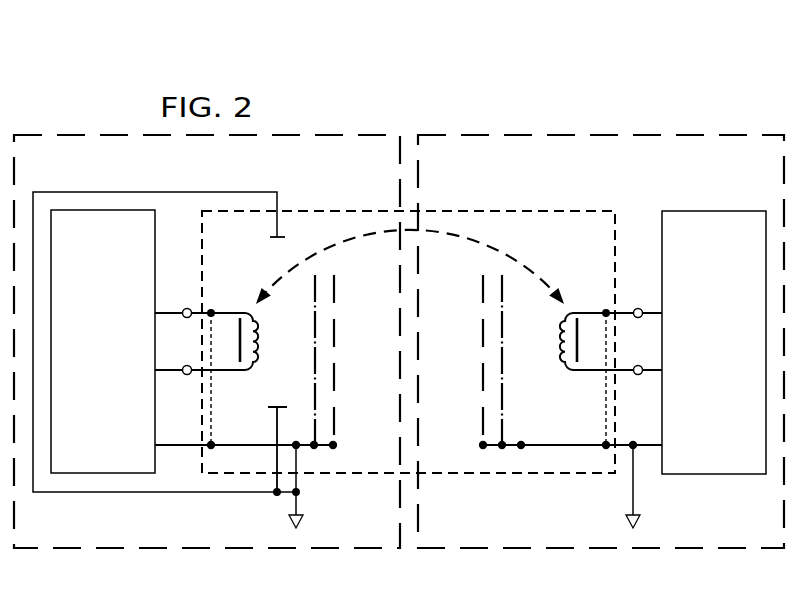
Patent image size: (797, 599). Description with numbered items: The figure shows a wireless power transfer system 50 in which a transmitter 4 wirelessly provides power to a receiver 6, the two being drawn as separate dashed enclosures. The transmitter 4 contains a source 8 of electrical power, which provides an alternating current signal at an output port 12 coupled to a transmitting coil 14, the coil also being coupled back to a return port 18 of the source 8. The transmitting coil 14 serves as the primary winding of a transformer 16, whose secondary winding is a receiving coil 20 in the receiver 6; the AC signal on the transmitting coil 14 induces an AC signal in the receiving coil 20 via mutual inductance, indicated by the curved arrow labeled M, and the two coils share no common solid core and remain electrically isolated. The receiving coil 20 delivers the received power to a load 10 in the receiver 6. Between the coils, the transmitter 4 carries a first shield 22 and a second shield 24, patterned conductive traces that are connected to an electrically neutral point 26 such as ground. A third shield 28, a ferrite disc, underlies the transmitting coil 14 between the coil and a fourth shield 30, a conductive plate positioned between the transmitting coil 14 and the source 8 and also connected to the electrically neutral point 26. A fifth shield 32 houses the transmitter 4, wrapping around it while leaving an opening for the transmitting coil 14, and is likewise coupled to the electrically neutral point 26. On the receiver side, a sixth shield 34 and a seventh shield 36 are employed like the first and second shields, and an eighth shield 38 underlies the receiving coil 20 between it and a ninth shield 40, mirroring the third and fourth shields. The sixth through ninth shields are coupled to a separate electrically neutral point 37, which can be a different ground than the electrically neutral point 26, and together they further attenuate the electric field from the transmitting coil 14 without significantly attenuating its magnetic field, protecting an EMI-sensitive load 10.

The transmitter 4 is at (114, 129).
The receiver 6 is at (650, 129).
The source 8 is at (109, 370).
The load 10 is at (724, 370).
The output port 12 is at (187, 308).
The transmitting coil 14 is at (254, 333).
The transformer 16 is at (337, 205).
The return port 18 is at (187, 375).
The receiving coil 20 is at (564, 336).
The first shield 22 is at (336, 380).
The second shield 24 is at (317, 323).
The electrically neutral point 26 is at (289, 517).
The third shield 28 is at (234, 331).
The fourth shield 30 is at (214, 382).
The fifth shield 32 is at (156, 191).
The sixth shield 34 is at (482, 380).
The seventh shield 36 is at (500, 322).
The electrically neutral point 37 is at (641, 519).
The eighth shield 38 is at (583, 332).
The ninth shield 40 is at (604, 380).
The wireless power transfer system 50 is at (508, 93).